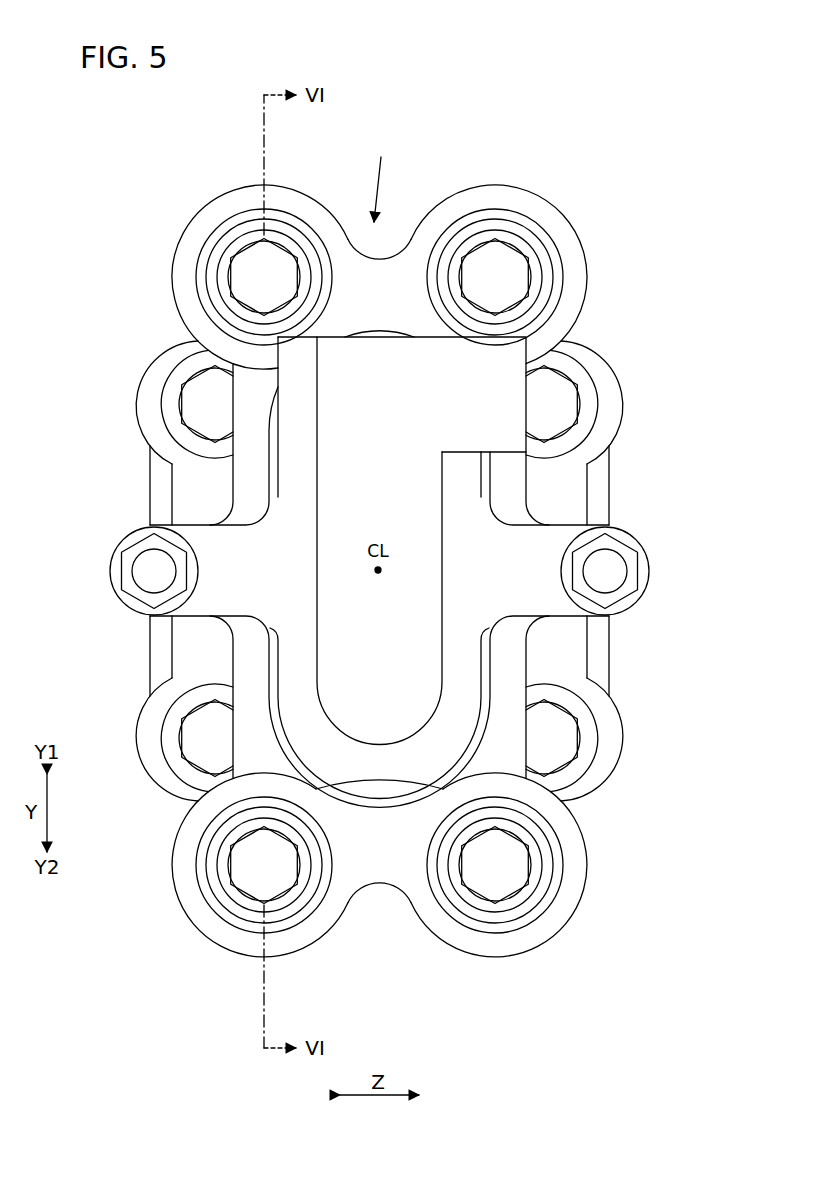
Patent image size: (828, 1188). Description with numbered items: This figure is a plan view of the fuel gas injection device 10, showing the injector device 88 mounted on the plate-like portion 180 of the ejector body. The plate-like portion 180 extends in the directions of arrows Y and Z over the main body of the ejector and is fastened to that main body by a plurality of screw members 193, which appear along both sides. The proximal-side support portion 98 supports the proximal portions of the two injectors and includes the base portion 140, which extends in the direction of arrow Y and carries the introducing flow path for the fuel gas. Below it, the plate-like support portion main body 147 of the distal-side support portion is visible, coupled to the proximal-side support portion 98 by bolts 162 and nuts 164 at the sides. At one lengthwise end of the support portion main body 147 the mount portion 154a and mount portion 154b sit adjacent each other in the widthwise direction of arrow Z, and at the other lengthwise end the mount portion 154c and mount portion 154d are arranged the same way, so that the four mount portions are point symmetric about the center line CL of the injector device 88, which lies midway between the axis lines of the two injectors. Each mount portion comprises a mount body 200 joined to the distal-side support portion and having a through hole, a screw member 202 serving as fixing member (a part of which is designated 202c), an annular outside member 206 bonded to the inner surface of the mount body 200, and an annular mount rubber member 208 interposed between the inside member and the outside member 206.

The motor support device 10 is at (94, 119).
The injector device 88 is at (382, 176).
The proximal-side support portion 98 is at (283, 352).
The base portion 140 is at (347, 498).
The support portion main body 147 is at (253, 660).
The mount portion 154a is at (190, 217).
The mount portion 154b is at (569, 217).
The mount portion 154c is at (192, 924).
The mount portion 154d is at (567, 924).
The bolt 162 is at (630, 570).
The nut 164 is at (121, 566).
The plate-like portion 180 is at (137, 386).
The screw member 193 is at (196, 405).
The mount body 200 is at (291, 204).
The screw member 202 is at (247, 250).
The bolt shank 202c is at (258, 258).
The outside member 206 is at (200, 248).
The mount rubber member 208 is at (212, 270).